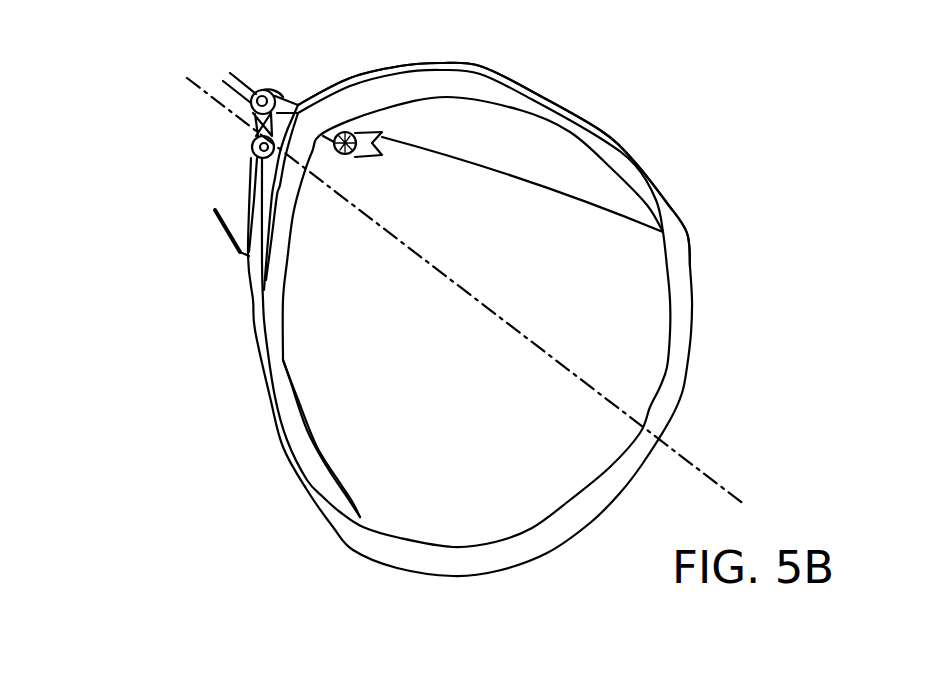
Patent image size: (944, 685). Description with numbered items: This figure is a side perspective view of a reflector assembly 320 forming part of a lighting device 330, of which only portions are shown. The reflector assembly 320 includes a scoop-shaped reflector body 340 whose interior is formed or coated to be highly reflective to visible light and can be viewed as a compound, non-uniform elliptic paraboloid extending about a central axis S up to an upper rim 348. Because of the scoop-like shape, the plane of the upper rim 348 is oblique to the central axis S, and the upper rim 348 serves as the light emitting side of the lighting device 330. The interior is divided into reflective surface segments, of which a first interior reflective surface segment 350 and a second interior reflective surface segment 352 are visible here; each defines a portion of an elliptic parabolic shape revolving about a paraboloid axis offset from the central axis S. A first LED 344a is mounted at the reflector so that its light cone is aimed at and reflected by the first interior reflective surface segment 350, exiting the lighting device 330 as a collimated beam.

The reflector assembly 320 is at (700, 238).
The lighting device 330 is at (237, 430).
The reflector body 340 is at (680, 398).
The first LED 344a is at (270, 94).
The upper rim 348 is at (634, 151).
The first interior reflective surface segment 350 is at (630, 317).
The second interior reflective surface segment 352 is at (517, 146).
The central axis S is at (473, 300).